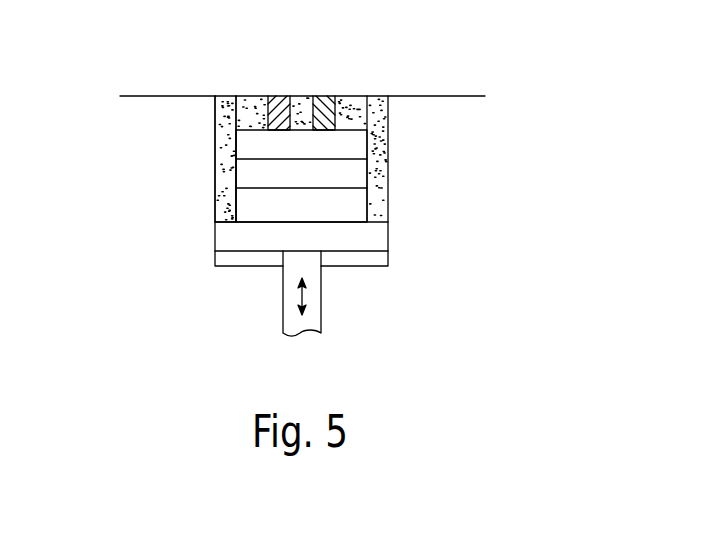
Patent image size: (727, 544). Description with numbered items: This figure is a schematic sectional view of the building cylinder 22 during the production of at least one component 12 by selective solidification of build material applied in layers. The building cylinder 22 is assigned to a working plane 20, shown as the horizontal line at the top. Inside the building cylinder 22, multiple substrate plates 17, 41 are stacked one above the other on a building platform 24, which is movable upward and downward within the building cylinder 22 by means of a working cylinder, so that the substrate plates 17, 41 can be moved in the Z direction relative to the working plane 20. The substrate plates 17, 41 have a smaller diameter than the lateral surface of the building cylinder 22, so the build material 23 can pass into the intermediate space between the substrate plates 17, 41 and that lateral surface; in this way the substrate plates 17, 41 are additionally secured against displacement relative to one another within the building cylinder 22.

The component 12 is at (275, 99).
The substrate plate 17 is at (357, 146).
The working plane 20 is at (460, 96).
The building cylinder 22 is at (215, 259).
The build material 23 is at (215, 137).
The building platform 24 is at (378, 237).
The substrate plate 41 is at (362, 174).